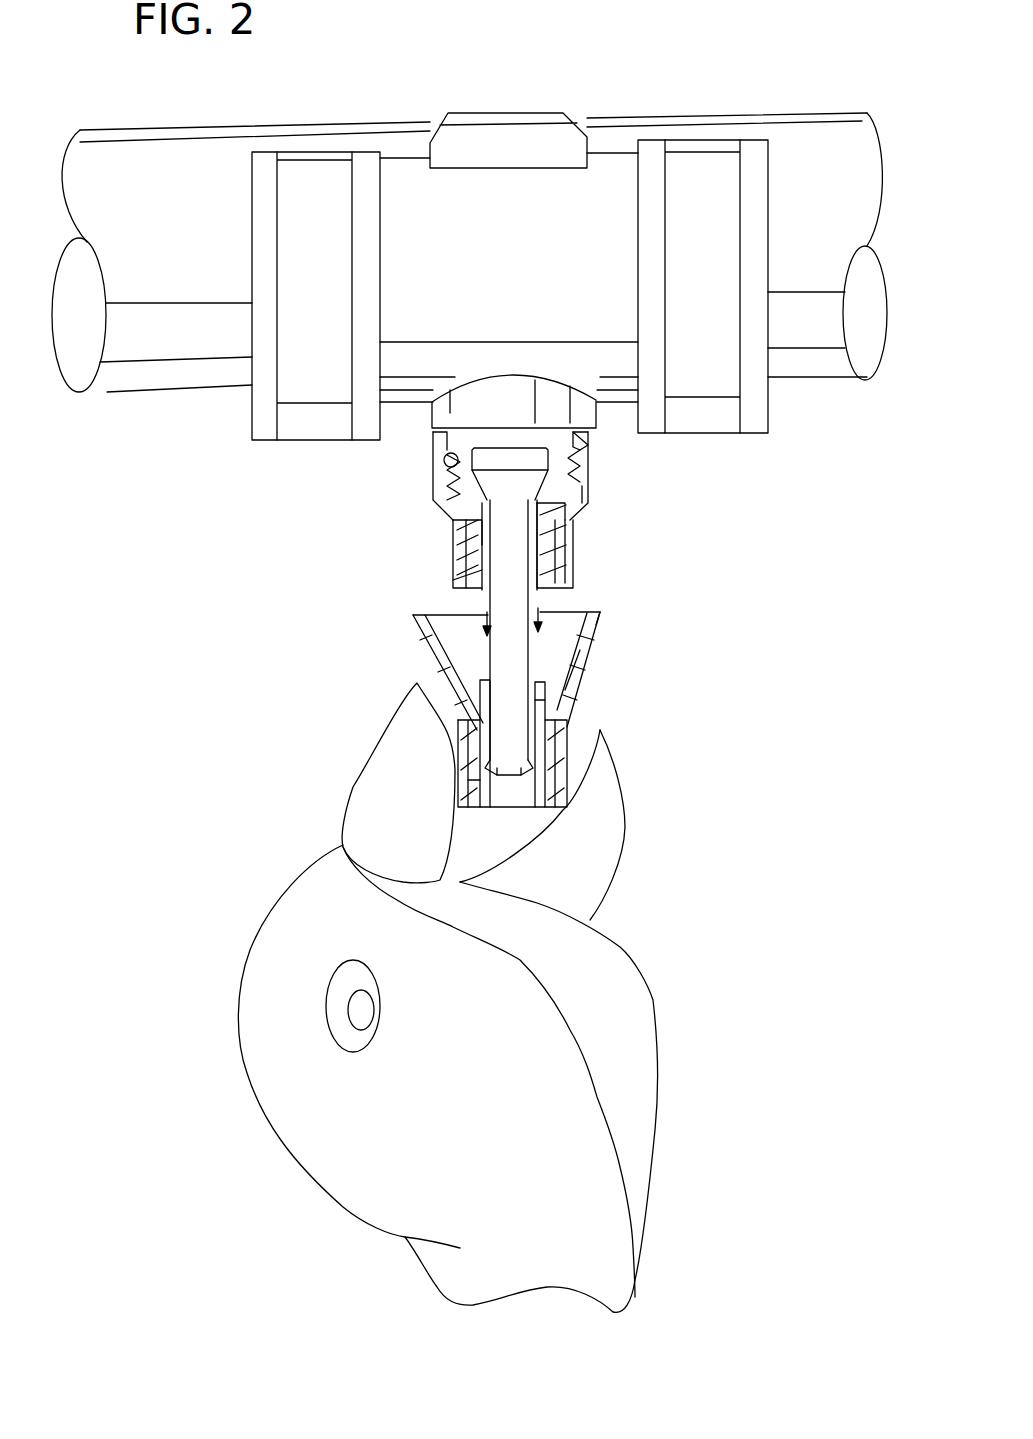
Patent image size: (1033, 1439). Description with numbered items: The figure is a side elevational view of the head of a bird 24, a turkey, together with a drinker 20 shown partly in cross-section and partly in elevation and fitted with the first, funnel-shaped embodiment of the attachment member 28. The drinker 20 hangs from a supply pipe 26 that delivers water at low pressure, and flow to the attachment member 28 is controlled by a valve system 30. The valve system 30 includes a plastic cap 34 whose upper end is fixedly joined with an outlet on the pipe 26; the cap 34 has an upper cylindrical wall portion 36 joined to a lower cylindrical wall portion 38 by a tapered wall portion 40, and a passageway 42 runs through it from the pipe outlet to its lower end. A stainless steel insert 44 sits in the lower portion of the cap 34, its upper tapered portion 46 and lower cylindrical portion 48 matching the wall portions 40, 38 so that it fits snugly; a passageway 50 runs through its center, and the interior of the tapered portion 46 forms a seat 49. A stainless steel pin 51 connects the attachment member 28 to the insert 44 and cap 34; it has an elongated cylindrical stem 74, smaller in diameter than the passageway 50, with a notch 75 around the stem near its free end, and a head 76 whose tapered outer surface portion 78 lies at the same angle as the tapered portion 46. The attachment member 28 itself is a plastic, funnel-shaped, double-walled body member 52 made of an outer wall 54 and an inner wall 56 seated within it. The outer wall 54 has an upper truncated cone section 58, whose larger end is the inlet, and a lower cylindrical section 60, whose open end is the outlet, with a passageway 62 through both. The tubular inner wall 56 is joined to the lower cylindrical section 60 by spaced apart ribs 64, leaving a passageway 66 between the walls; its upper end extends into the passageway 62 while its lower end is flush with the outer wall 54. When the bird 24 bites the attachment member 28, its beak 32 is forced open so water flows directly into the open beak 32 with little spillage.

The drinker 20 is at (343, 553).
The bird 24 is at (635, 1045).
The pipe 26 is at (185, 378).
The attachment member 28 is at (600, 642).
The valve system 30 is at (572, 538).
The beak 32 is at (590, 875).
The cap 34 is at (598, 443).
The upper cylindrical wall portion 36 is at (583, 483).
The lower cylindrical wall portion 38 is at (567, 563).
The tapered wall portion 40 is at (586, 492).
The passageway 42 is at (443, 456).
The insert 44 is at (473, 554).
The upper tapered portion 46 is at (447, 497).
The lower cylindrical portion 48 is at (477, 530).
The seat 49 is at (562, 520).
The passageway 50 is at (483, 567).
The pin 51 is at (534, 670).
The body member 52 is at (425, 630).
The outer wall 54 is at (584, 665).
The inner wall 56 is at (554, 728).
The upper truncated cone section 58 is at (598, 624).
The lower cylindrical section 60 is at (566, 767).
The passageway 62 is at (452, 653).
The ribs 64 is at (470, 722).
The passageway 66 is at (475, 783).
The stem 74 is at (510, 798).
The notch 75 is at (527, 768).
The head 76 is at (508, 457).
The tapered outer surface portion 78 is at (510, 477).